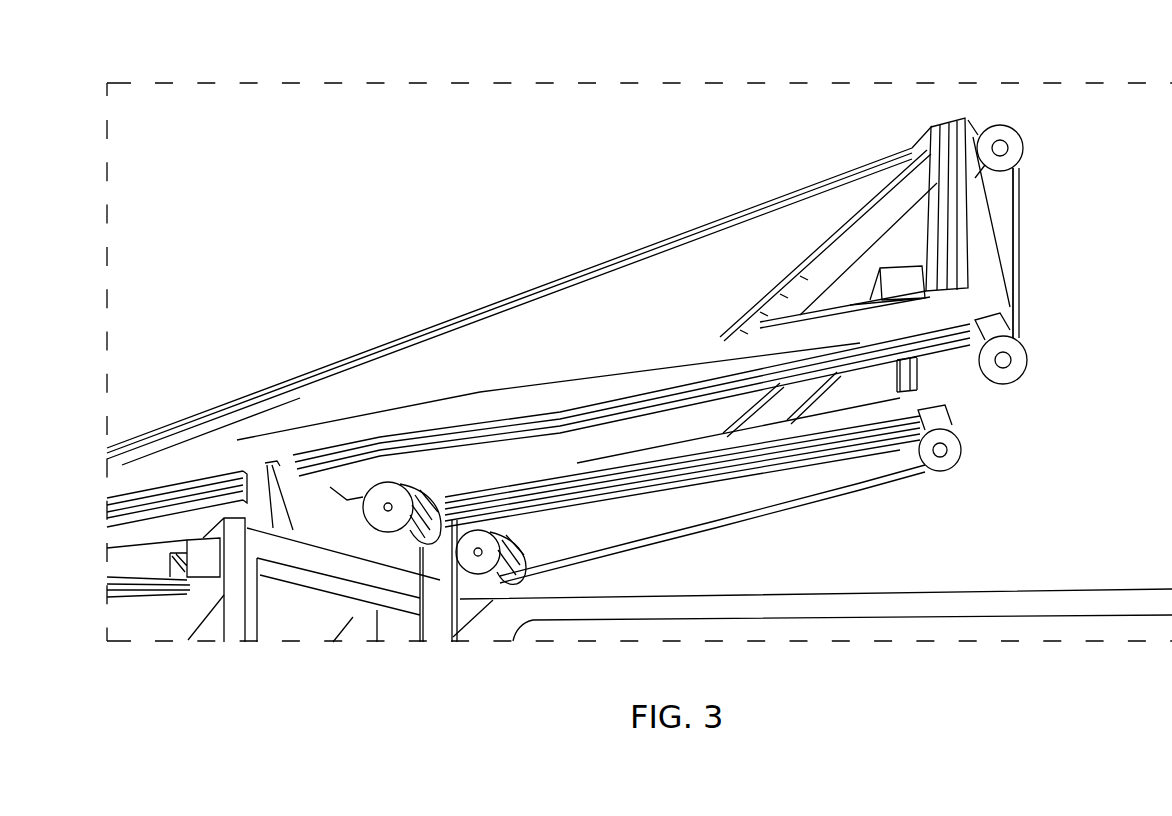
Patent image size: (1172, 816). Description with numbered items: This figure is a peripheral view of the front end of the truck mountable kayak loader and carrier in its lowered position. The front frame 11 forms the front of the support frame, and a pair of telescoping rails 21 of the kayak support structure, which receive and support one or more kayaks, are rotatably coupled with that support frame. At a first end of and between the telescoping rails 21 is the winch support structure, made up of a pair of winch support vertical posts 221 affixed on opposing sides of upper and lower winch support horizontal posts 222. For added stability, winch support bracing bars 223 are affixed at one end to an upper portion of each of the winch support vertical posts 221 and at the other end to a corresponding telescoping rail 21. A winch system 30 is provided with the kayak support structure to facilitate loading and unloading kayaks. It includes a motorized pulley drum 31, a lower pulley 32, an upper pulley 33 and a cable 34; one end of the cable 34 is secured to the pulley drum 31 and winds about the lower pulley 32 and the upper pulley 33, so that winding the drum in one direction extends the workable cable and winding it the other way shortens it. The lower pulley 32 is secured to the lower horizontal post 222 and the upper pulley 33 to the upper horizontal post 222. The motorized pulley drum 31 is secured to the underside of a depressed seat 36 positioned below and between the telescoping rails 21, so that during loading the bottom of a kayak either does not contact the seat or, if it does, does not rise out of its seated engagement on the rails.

The front frame 11 is at (390, 583).
The telescoping rails 21 is at (527, 505).
The winch support vertical posts 221 is at (952, 118).
The winch support horizontal posts 222 is at (980, 388).
The winch support bracing bars 223 is at (825, 263).
The winch system 30 is at (1080, 268).
The motorized pulley drum 31 is at (470, 603).
The lower pulley 32 is at (1021, 368).
The upper pulley 33 is at (1021, 133).
The cable 34 is at (860, 460).
The depressed seat 36 is at (440, 477).